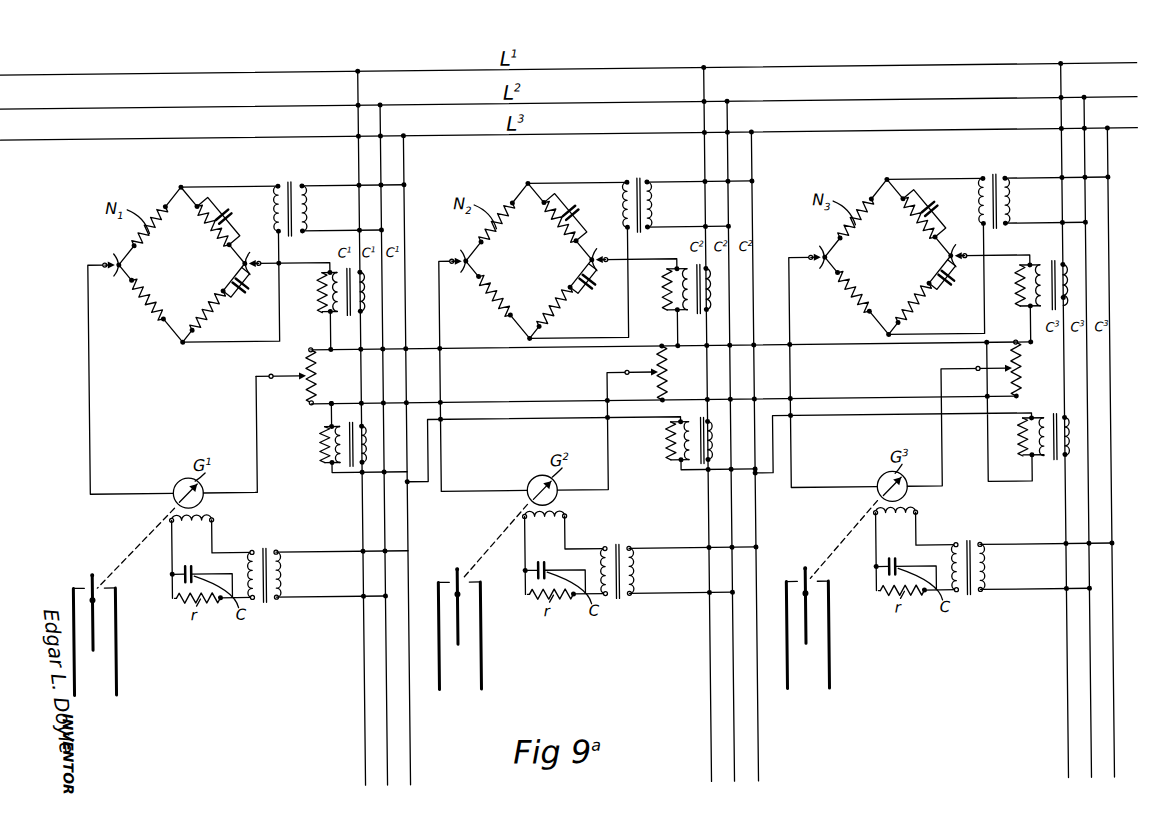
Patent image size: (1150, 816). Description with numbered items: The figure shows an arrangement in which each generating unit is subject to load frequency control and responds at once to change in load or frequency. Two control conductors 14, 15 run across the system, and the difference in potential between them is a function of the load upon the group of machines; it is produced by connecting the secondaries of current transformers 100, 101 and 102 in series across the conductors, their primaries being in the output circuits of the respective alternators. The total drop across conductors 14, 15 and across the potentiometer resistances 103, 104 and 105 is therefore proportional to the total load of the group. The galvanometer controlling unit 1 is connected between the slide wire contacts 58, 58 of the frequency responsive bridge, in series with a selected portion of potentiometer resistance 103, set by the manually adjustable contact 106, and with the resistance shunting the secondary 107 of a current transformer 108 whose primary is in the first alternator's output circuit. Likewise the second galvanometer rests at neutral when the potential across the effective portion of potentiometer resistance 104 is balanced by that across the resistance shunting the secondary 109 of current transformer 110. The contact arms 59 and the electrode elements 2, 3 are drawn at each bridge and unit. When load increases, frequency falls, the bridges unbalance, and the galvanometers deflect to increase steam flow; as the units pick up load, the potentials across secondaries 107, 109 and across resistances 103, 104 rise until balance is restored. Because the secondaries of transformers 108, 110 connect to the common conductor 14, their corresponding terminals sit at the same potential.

The unit 1 is at (85, 578).
The electrode 2 is at (78, 591).
The electrode 3 is at (98, 591).
The control conductor 14 is at (475, 351).
The control conductor 15 is at (473, 404).
The slide wire contact 58 is at (102, 262).
The contact arm 59 is at (121, 264).
The current transformer 100 is at (329, 467).
The current transformer 101 is at (685, 468).
The current transformer 102 is at (1040, 466).
The potentiometer resistance 103 is at (305, 395).
The potentiometer resistance 104 is at (663, 377).
The potentiometer resistance 105 is at (1016, 373).
The manually adjustable contact 106 is at (292, 378).
The secondary 107 is at (320, 274).
The current transformer 108 is at (335, 314).
The secondary 109 is at (663, 289).
The current transformer 110 is at (703, 317).